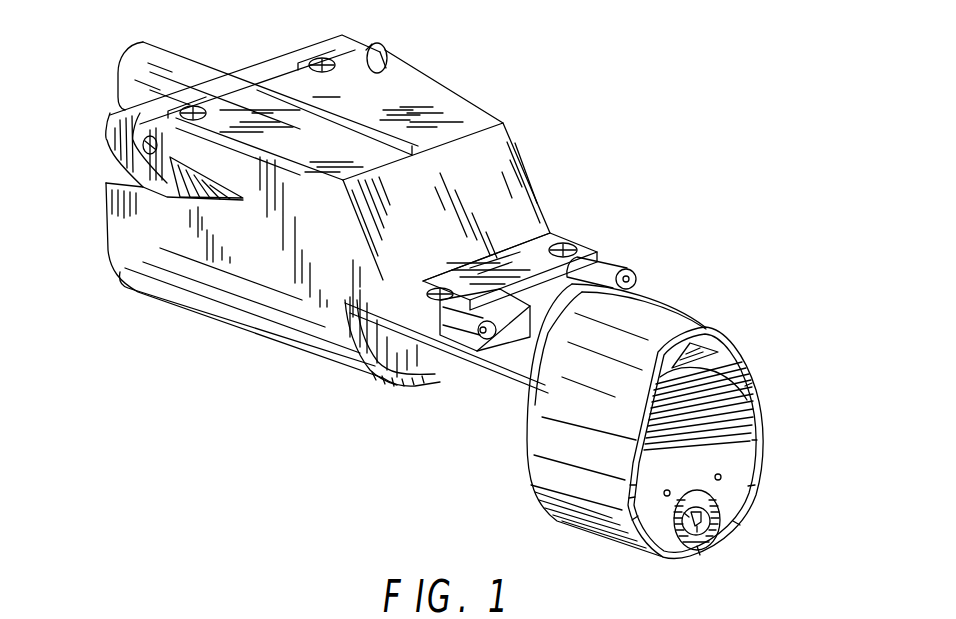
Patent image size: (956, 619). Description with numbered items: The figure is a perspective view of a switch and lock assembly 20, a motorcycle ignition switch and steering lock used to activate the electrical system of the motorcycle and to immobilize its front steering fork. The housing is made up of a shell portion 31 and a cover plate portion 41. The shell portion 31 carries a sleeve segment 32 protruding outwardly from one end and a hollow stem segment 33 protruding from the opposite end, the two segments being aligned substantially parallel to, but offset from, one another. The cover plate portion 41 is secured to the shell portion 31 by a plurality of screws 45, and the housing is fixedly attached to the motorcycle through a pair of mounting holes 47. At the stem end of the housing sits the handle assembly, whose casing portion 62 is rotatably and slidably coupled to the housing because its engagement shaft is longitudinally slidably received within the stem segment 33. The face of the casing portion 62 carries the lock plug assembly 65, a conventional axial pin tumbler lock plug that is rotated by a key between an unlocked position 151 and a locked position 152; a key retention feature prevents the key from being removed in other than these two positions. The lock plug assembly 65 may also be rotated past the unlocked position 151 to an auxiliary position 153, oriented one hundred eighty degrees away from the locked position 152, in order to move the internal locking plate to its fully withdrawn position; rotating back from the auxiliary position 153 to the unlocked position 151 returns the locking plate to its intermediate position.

The switch and lock assembly 20 is at (706, 218).
The shell portion 31 is at (313, 310).
The sleeve segment 32 is at (167, 52).
The stem segment 33 is at (530, 352).
The cover plate portion 41 is at (467, 113).
The screws 45 is at (573, 247).
The mounting holes 47 is at (390, 62).
The casing portion 62 is at (700, 322).
The lock plug assembly 65 is at (700, 518).
The unlocked position 151 is at (665, 497).
The locked position 152 is at (721, 477).
The auxiliary position 153 is at (683, 556).